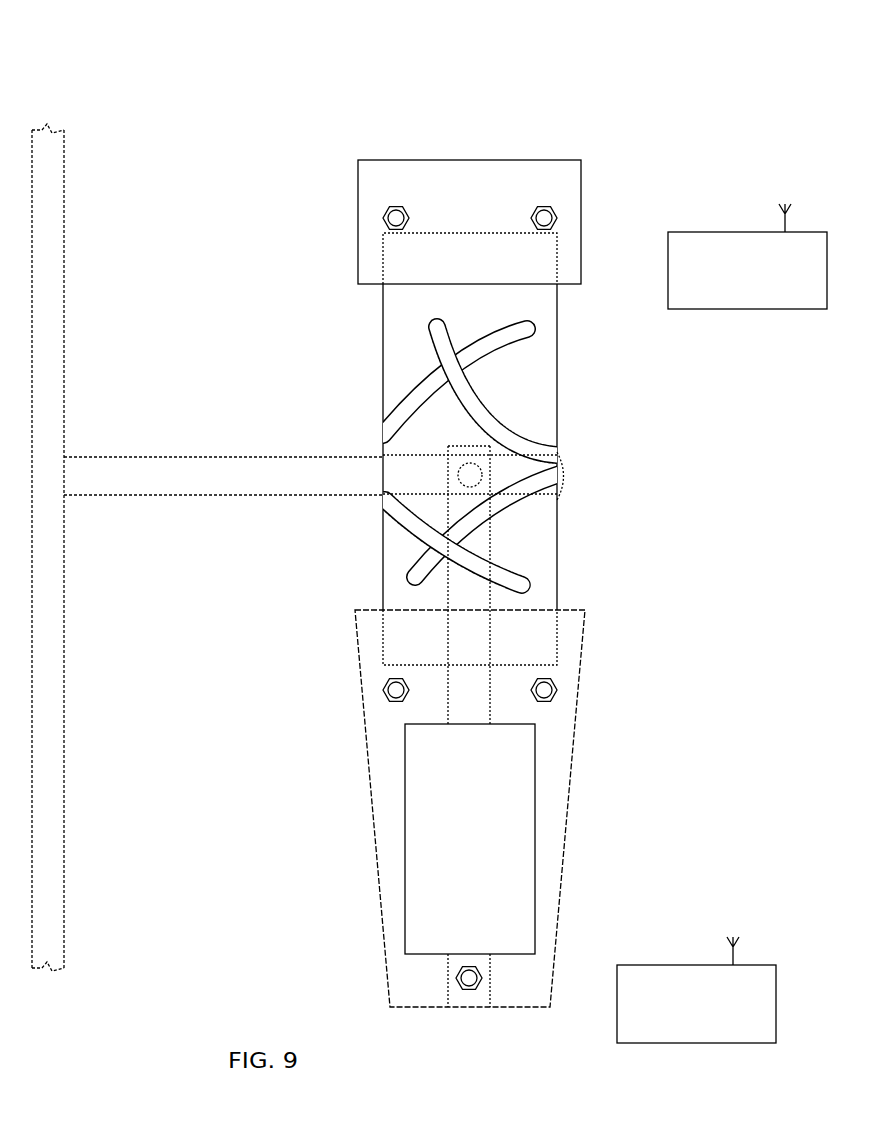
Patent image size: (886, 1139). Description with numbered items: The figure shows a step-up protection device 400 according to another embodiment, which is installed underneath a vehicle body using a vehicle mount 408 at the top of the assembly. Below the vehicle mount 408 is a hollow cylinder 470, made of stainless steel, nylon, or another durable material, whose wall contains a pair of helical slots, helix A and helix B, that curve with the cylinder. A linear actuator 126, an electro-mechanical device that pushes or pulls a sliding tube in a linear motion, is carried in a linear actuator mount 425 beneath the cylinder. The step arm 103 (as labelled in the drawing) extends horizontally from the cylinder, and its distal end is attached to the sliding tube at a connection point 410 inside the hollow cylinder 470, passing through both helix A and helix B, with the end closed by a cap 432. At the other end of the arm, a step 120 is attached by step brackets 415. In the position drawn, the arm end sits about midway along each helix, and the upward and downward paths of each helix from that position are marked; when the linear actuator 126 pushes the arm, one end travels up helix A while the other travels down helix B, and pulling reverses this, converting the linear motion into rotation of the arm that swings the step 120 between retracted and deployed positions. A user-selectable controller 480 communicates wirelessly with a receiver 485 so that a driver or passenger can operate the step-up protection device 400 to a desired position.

The step-up protection device 400 is at (158, 70).
The vehicle mount 408 is at (568, 175).
The connection point 410 is at (482, 473).
The step brackets 415 is at (53, 477).
The arm 103 is at (223, 489).
The step 120 is at (52, 657).
The cap 432 is at (568, 473).
The linear actuator mount 425 is at (571, 770).
The linear actuator 126 is at (415, 898).
The hollow cylinder 470 is at (471, 447).
The user-selectable controller 480 is at (747, 256).
The receiver 485 is at (522, 928).